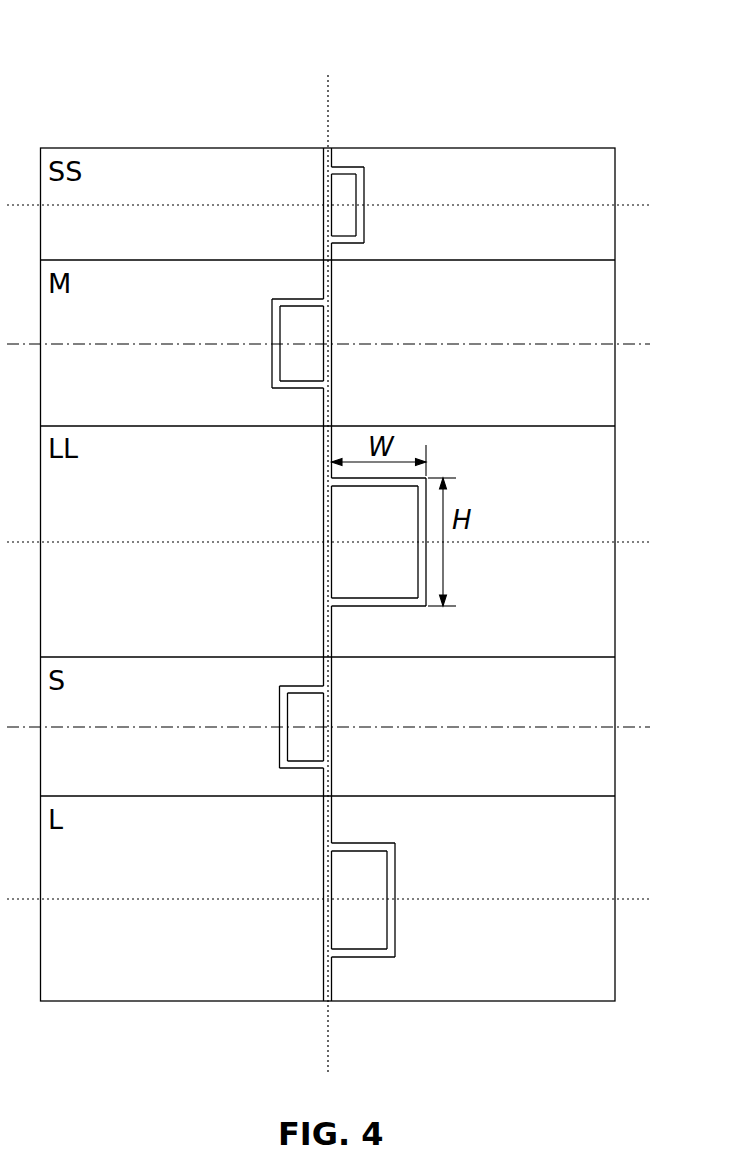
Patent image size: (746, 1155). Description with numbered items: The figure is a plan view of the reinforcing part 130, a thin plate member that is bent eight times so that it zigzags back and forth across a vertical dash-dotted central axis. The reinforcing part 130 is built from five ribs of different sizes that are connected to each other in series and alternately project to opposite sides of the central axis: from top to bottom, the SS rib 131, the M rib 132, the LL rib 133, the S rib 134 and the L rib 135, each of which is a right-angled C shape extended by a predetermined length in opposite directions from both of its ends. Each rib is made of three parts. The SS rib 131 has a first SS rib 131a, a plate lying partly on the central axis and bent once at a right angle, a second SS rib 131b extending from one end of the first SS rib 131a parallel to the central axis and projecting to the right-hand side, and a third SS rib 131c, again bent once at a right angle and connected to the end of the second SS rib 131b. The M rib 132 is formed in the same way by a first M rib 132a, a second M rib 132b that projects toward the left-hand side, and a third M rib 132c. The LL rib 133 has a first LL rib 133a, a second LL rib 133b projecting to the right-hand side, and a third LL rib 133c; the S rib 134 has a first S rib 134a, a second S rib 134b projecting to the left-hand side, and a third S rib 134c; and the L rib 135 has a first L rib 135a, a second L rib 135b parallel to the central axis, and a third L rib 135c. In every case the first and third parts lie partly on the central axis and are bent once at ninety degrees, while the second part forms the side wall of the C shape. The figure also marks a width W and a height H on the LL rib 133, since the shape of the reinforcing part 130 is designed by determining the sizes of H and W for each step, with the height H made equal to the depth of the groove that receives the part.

The reinforcing part 130 is at (62, 33).
The SS rib 131 is at (450, 204).
The first SS rib 131a is at (334, 152).
The second SS rib 131b is at (364, 193).
The third SS rib 131c is at (334, 252).
The M rib 132 is at (424, 343).
The first M rib 132a is at (333, 283).
The second M rib 132b is at (283, 367).
The third M rib 132c is at (333, 405).
The LL rib 133 is at (269, 541).
The first LL rib 133a is at (323, 457).
The second LL rib 133b is at (418, 575).
The third LL rib 133c is at (323, 627).
The S rib 134 is at (428, 726).
The first S rib 134a is at (333, 673).
The second S rib 134b is at (290, 745).
The third S rib 134c is at (333, 778).
The L rib 135 is at (450, 898).
The first L rib 135a is at (333, 818).
The second L rib 135b is at (397, 918).
The third L rib 135c is at (333, 980).